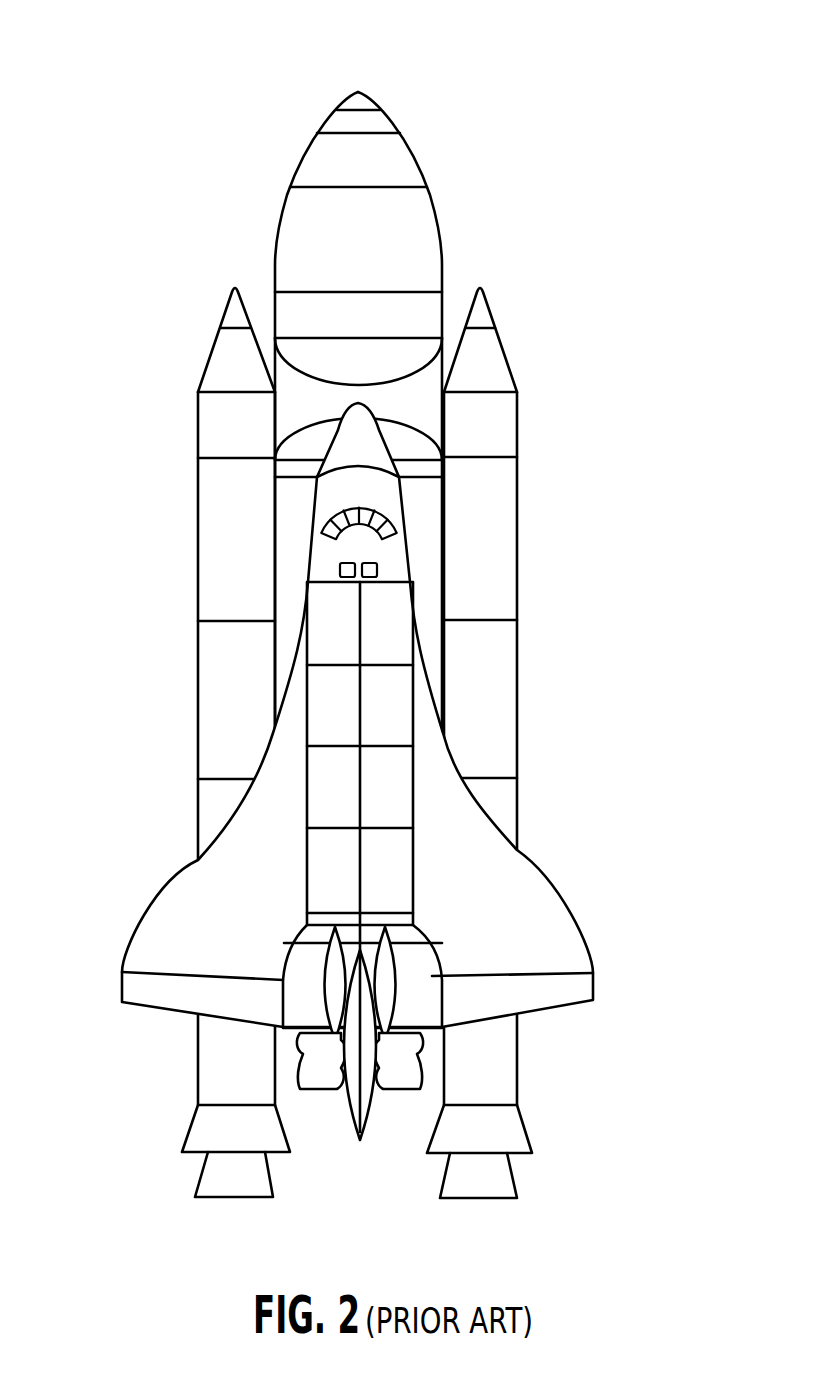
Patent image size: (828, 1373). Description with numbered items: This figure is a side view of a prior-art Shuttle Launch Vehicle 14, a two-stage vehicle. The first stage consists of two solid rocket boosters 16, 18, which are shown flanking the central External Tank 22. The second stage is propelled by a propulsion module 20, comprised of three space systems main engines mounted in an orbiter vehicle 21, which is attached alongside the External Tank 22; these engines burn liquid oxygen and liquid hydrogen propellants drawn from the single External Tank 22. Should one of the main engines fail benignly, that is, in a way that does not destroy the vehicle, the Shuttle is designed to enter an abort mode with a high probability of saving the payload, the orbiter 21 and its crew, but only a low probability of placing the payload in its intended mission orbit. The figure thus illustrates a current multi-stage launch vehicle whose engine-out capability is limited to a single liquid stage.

The Shuttle Launch Vehicle 14 is at (380, 599).
The solid rocket booster 16 is at (198, 650).
The solid rocket booster 18 is at (517, 622).
The propulsion module 20 is at (397, 771).
The orbiter vehicle 21 is at (392, 790).
The External Tank 22 is at (445, 265).